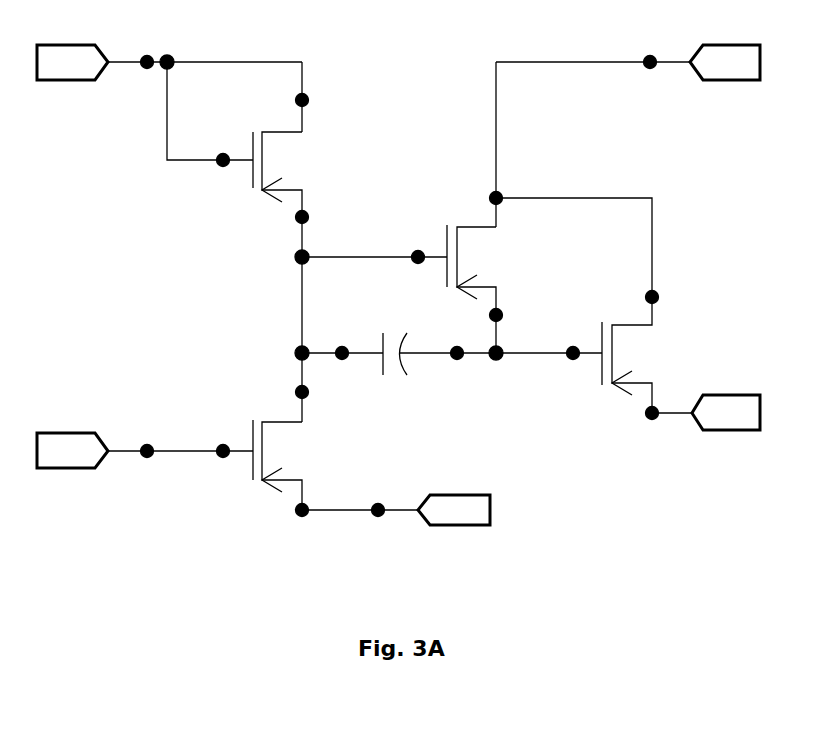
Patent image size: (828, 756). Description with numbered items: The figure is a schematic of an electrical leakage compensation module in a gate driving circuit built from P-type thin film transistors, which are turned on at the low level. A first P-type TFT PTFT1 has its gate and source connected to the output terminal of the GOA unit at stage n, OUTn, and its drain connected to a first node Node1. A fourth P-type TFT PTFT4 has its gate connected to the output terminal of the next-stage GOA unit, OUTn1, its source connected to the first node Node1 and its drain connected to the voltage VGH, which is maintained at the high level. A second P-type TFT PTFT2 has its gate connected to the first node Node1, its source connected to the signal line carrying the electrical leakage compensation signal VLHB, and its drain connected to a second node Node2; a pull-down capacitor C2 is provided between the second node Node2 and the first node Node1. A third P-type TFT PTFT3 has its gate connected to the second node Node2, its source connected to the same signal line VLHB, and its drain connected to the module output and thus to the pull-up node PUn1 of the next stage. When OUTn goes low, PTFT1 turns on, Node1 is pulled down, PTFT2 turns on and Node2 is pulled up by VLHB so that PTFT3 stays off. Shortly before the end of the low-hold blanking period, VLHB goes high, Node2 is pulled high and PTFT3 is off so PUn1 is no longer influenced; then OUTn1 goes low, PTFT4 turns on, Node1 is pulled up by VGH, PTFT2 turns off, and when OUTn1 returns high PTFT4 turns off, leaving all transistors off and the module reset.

The first P-type TFT PTFT1 is at (253, 143).
The second P-type TFT PTFT2 is at (492, 207).
The third P-type TFT PTFT3 is at (593, 305).
The fourth P-type TFT PTFT4 is at (296, 431).
The pull-down capacitor C2 is at (351, 371).
The first node Node1 is at (337, 285).
The second node Node2 is at (458, 369).
The output terminal of the GOA unit at stage n OUTn is at (169, 45).
The output terminal of the GOA unit at stage n+1 OUTn1 is at (145, 433).
The electrical leakage compensation signal VLHB is at (628, 46).
The voltage VGH is at (393, 496).
The PU node of the GOA unit at stage n+1 PUn1 is at (703, 435).